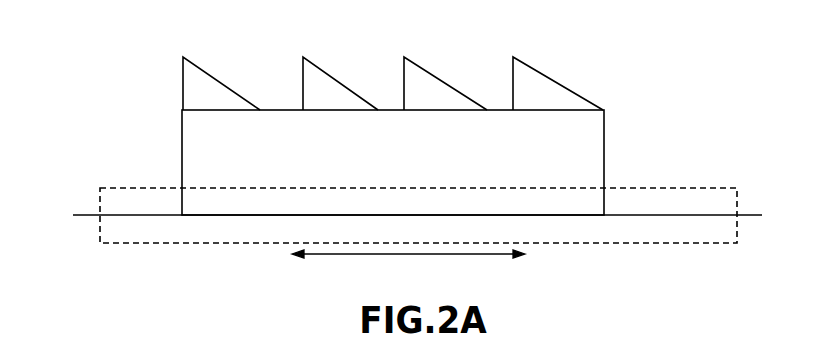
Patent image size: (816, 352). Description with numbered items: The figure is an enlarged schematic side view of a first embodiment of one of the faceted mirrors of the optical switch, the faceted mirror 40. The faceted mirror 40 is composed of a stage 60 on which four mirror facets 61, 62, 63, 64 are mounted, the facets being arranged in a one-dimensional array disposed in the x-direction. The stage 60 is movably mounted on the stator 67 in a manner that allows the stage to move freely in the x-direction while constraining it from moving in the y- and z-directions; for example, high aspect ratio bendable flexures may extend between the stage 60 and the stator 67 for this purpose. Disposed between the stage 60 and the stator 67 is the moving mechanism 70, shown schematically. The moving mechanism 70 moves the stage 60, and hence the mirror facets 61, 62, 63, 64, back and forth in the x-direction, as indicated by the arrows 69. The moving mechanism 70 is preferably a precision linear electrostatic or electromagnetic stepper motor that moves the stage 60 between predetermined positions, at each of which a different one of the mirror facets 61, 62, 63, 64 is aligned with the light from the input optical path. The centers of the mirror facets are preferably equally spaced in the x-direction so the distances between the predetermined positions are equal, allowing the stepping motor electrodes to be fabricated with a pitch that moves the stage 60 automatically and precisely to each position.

The faceted mirror 40 is at (387, 123).
The stage 60 is at (182, 160).
The mirror facet 61 is at (543, 75).
The mirror facet 62 is at (433, 77).
The mirror facet 63 is at (322, 77).
The mirror facet 64 is at (212, 77).
The stator 67 is at (88, 215).
The arrows 69 is at (418, 256).
The moving mechanism 70 is at (662, 188).